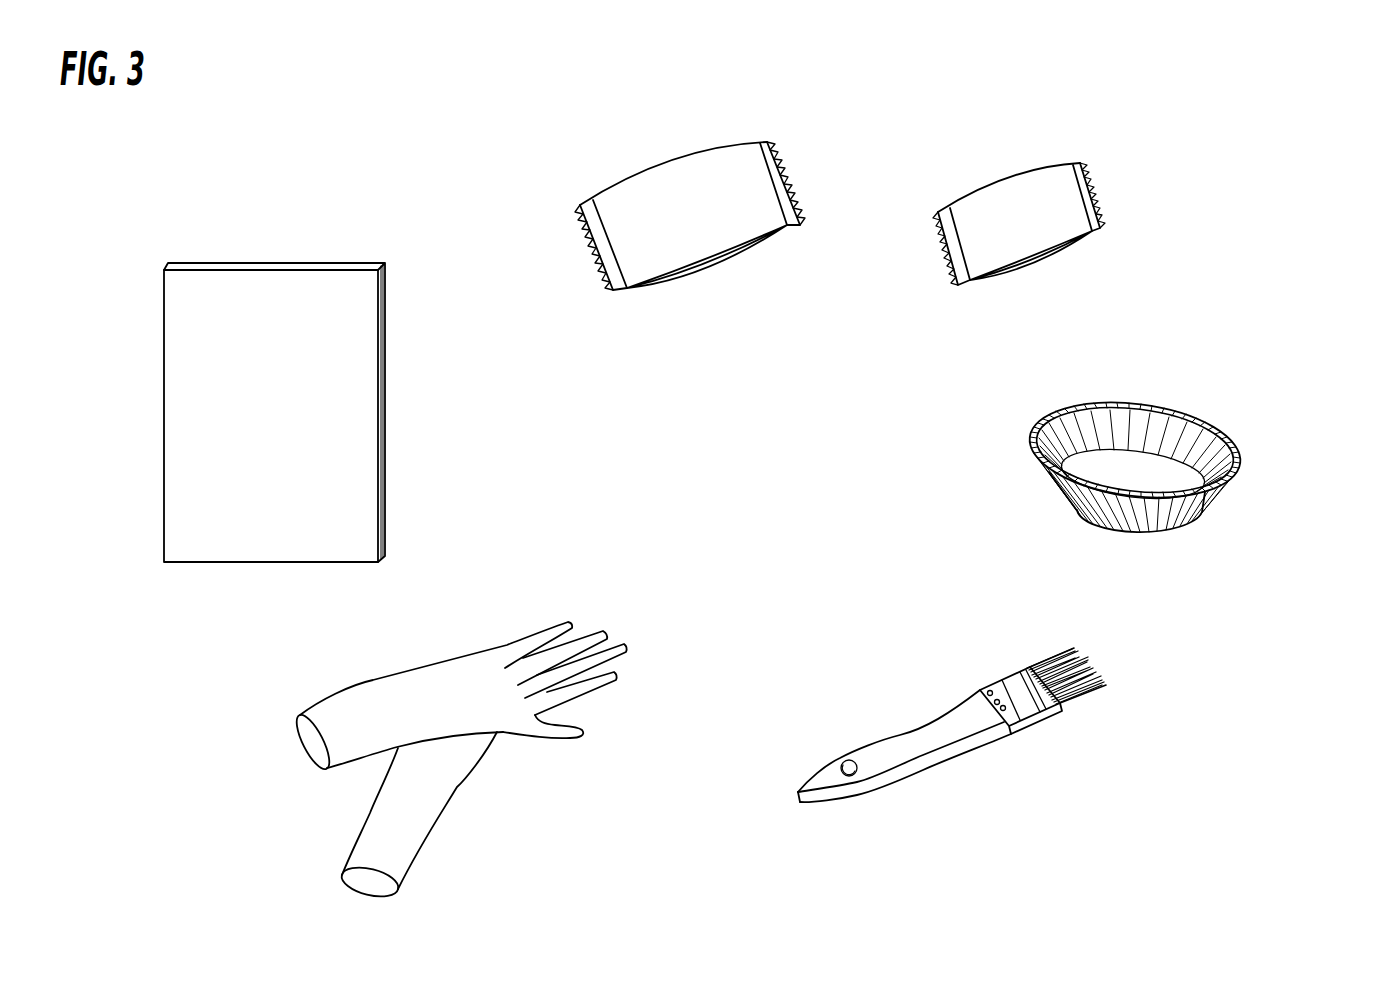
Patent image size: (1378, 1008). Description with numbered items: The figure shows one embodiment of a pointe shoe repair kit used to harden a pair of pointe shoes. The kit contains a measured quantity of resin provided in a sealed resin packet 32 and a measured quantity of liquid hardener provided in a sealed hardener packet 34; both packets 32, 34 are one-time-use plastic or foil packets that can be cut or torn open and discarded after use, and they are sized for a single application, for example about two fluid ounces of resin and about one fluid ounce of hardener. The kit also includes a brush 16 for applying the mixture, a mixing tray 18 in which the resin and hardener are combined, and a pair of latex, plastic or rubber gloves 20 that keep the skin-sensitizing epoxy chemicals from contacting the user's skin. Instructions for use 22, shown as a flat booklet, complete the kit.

The brush 16 is at (1107, 647).
The mixing tray 18 is at (1183, 387).
The gloves 20 is at (587, 592).
The instructions for use 22 is at (293, 212).
The resin packet 32 is at (727, 115).
The hardener packet 34 is at (1127, 185).